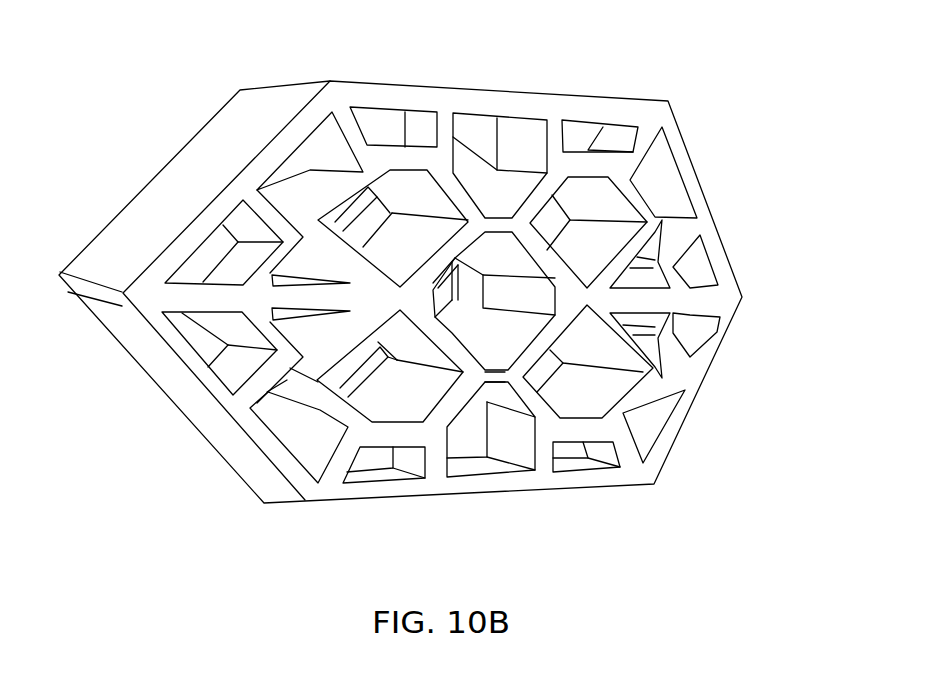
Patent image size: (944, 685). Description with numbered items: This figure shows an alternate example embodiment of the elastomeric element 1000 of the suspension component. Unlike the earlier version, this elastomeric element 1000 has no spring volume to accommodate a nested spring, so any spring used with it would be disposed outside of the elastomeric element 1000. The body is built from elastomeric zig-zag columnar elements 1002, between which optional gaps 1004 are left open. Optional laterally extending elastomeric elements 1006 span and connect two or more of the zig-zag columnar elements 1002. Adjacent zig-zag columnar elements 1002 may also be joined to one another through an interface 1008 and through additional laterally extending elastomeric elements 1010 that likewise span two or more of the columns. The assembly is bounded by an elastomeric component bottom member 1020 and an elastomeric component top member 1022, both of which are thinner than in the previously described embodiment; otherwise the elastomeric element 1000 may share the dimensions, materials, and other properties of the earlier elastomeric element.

The elastomeric element 1000 is at (733, 101).
The elastomeric zig-zag columnar element 1002 is at (345, 215).
The gap 1004 is at (657, 187).
The laterally extending elastomeric element 1006 is at (210, 298).
The interface 1008 is at (400, 297).
The additional laterally extending elastomeric element 1010 is at (398, 157).
The elastomeric component bottom member 1020 is at (490, 483).
The elastomeric component top member 1022 is at (490, 100).